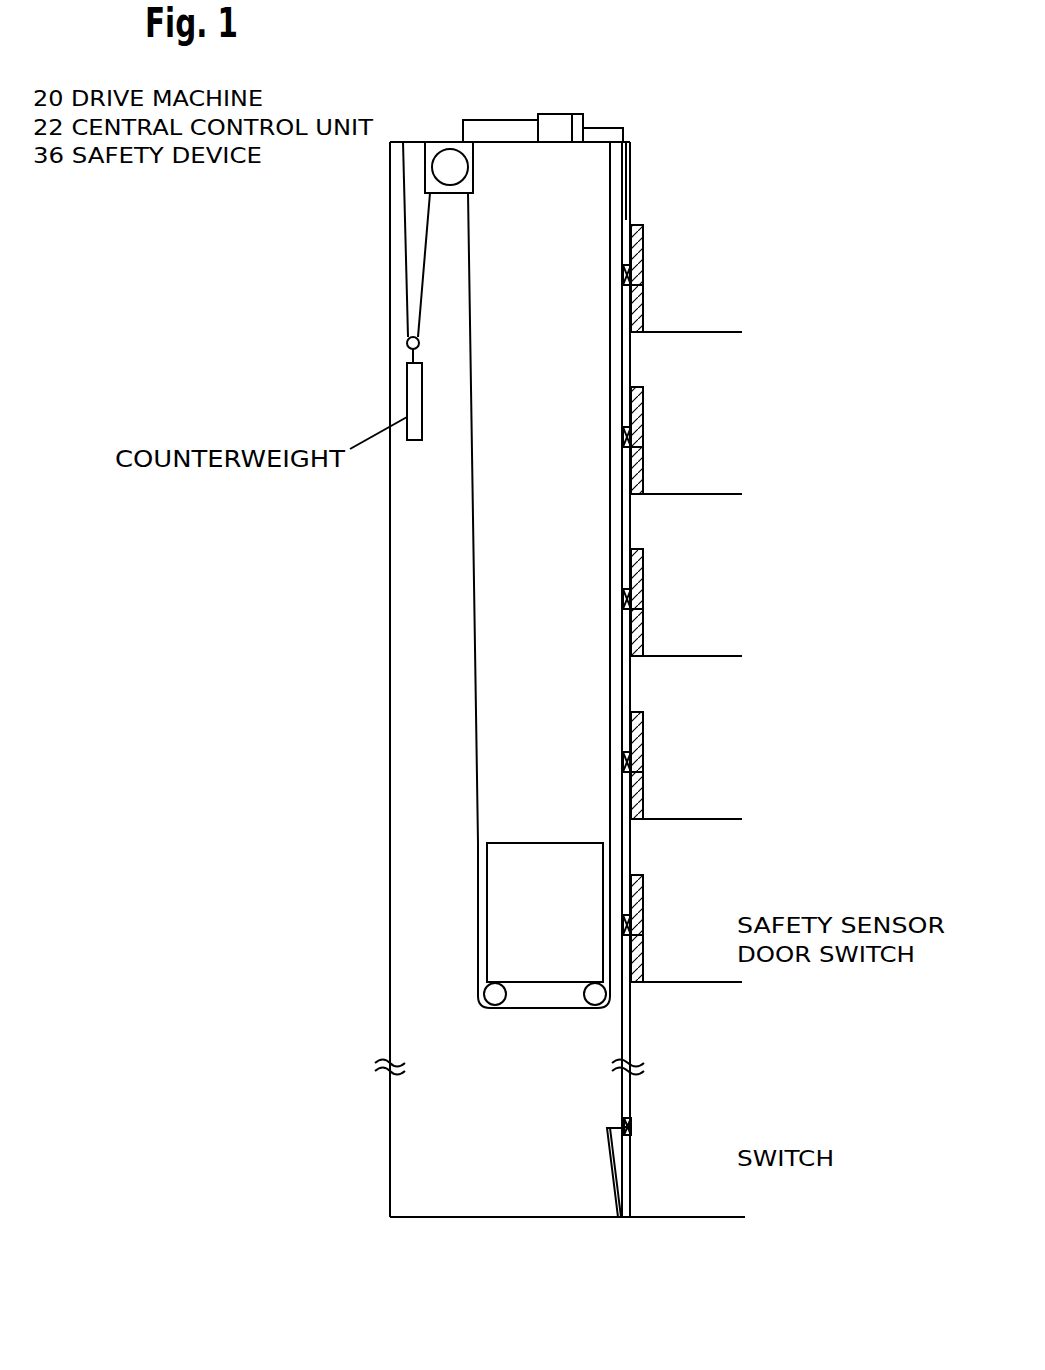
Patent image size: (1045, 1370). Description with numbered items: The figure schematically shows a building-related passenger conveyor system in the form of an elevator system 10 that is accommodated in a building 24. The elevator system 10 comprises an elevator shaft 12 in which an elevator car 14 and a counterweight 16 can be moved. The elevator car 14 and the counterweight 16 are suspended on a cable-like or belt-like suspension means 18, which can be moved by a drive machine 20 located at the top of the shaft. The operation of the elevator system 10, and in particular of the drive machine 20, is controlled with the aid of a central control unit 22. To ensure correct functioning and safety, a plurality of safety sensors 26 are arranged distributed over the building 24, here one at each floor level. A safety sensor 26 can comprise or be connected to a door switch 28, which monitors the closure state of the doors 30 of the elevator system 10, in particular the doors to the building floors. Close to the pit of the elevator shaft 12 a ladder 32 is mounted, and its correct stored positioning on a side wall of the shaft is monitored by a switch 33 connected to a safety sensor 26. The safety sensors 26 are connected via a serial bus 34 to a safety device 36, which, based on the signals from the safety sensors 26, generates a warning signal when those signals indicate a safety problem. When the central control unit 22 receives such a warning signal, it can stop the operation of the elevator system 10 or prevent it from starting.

The elevator system 10 is at (774, 74).
The elevator shaft 12 is at (563, 647).
The elevator car 14 is at (565, 923).
The counterweight 16 is at (415, 440).
The suspension means 18 is at (476, 449).
The drive machine 20 is at (451, 163).
The central control unit 22 is at (554, 112).
The building 24 is at (827, 301).
The safety sensor 26 is at (631, 273).
The door switch 28 is at (640, 282).
The door 30 is at (634, 237).
The ladder 32 is at (614, 1181).
The switch 33 is at (632, 1132).
The serial bus 34 is at (627, 160).
The safety device 36 is at (577, 128).